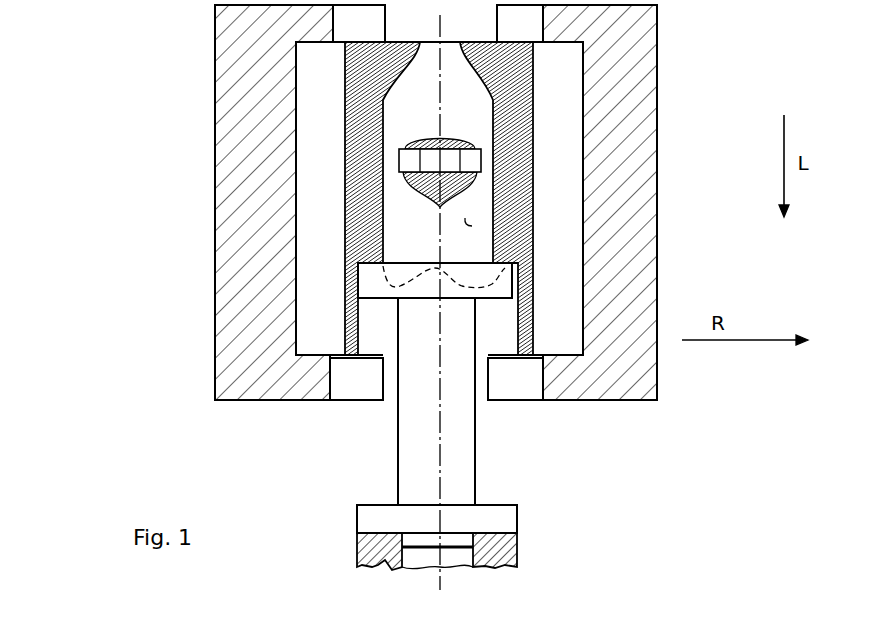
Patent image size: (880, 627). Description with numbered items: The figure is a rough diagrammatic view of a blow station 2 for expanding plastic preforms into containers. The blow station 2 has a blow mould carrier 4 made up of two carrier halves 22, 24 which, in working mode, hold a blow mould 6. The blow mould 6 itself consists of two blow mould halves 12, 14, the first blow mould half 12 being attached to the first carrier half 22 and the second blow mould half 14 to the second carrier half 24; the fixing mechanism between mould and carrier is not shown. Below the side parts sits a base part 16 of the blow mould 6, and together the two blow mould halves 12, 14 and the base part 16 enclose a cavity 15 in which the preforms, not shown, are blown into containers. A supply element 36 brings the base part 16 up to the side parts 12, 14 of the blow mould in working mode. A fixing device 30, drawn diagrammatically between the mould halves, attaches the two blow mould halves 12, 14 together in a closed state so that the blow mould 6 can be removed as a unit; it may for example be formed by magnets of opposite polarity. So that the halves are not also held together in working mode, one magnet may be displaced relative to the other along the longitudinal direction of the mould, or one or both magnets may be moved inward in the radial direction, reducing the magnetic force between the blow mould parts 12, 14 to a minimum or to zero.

The blow station 2 is at (205, 198).
The blow mould carrier 4 is at (205, 113).
The blow mould 6 is at (335, 106).
The first blow mould half 12 is at (345, 216).
The second blow mould half 14 is at (535, 113).
The cavity 15 is at (472, 226).
The base part 16 is at (515, 287).
The first carrier half 22 is at (242, 295).
The second carrier half 24 is at (599, 187).
The fixing device 30 is at (463, 190).
The supply element 36 is at (458, 450).